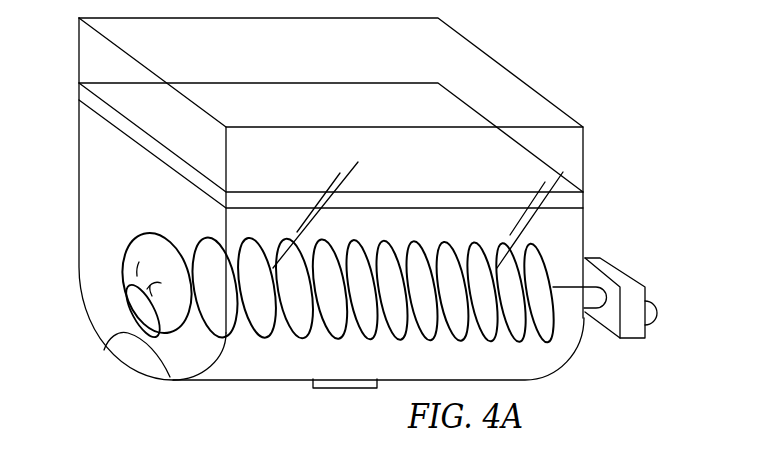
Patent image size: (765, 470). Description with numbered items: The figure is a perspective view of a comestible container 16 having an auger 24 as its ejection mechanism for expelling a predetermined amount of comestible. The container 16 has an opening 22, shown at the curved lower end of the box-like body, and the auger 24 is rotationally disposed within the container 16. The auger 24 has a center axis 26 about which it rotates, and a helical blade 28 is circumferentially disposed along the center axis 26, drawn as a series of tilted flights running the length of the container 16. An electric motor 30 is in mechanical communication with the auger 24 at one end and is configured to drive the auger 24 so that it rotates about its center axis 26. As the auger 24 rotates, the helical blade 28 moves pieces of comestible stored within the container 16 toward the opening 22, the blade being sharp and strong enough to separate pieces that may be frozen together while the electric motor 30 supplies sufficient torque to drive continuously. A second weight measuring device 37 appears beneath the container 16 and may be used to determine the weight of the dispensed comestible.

The container 16 is at (522, 82).
The opening 22 is at (127, 334).
The auger 24 is at (538, 255).
The center axis 26 is at (565, 302).
The helical blade 28 is at (137, 246).
The electric motor 30 is at (629, 287).
The second weight measuring device 37 is at (337, 389).